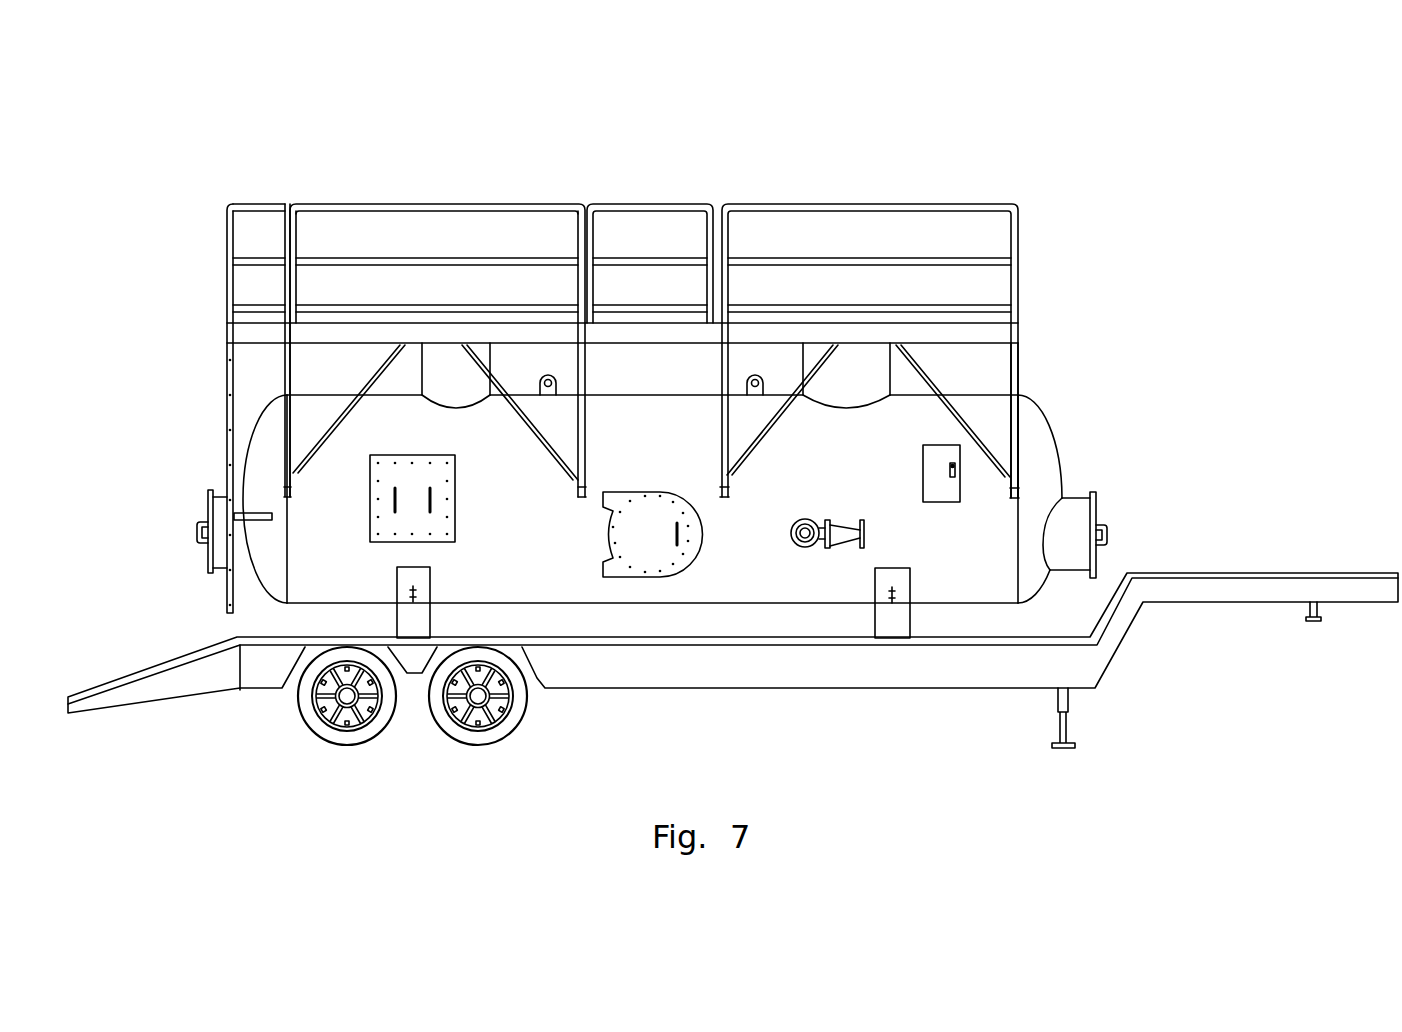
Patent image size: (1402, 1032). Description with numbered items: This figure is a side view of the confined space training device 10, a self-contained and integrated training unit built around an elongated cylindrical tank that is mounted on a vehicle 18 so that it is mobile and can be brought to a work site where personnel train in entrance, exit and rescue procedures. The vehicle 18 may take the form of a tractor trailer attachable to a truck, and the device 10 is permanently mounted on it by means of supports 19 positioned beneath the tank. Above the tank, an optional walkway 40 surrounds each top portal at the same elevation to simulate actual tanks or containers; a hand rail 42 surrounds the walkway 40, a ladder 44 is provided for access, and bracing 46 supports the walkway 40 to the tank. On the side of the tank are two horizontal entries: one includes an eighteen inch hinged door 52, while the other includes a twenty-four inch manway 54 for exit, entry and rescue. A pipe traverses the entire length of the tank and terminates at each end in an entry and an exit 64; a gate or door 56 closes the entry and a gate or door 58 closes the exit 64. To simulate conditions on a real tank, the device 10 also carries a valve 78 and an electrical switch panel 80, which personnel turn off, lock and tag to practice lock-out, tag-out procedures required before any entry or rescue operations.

The confined space training device 10 is at (1208, 371).
The vehicle 18 is at (1265, 573).
The supports 19 is at (892, 618).
The walkway 40 is at (1018, 335).
The hand rail 42 is at (900, 203).
The ladder 44 is at (227, 383).
The bracing 46 is at (1018, 377).
The hinged door 52 is at (372, 532).
The manway 54 is at (620, 577).
The gate or door 56 is at (207, 510).
The gate or door 58 is at (1097, 512).
The exit 64 is at (1072, 500).
The valve 78 is at (827, 553).
The electrical switch panel 80 is at (923, 473).